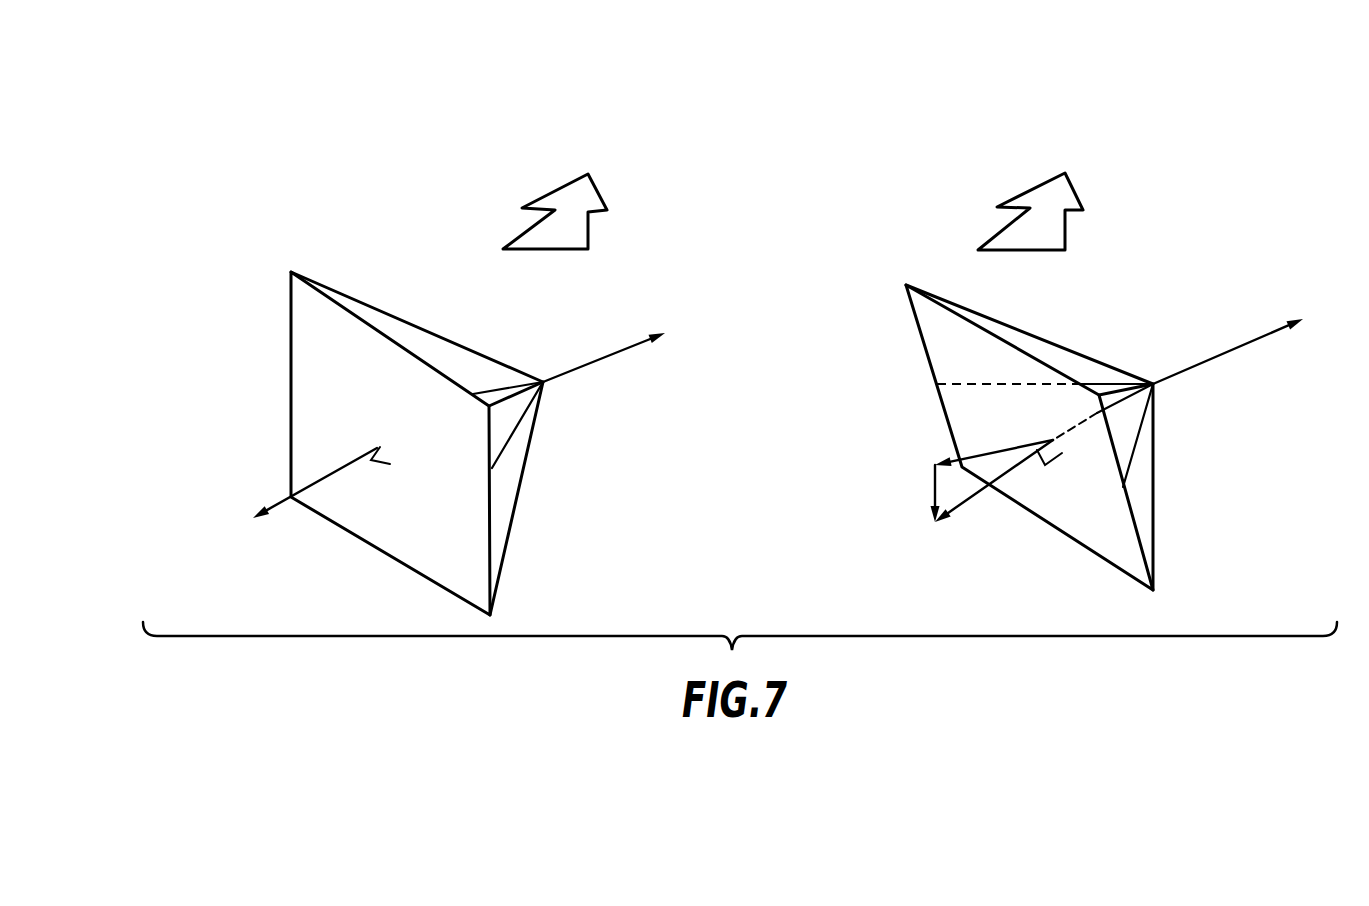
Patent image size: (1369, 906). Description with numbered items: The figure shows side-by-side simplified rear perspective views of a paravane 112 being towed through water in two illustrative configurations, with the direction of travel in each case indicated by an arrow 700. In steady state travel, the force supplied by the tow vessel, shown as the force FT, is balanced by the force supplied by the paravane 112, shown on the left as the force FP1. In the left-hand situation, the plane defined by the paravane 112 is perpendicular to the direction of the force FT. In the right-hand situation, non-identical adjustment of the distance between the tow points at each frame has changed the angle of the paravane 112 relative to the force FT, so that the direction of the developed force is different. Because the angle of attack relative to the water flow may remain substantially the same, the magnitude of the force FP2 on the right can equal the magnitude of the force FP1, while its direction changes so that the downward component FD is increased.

The paravane 112 is at (298, 247).
The arrow 700 is at (597, 188).
The tow vessel force FT is at (943, 340).
The paravane force FP1 is at (262, 482).
The paravane force FP2 is at (1042, 499).
The downward force component FD is at (947, 495).